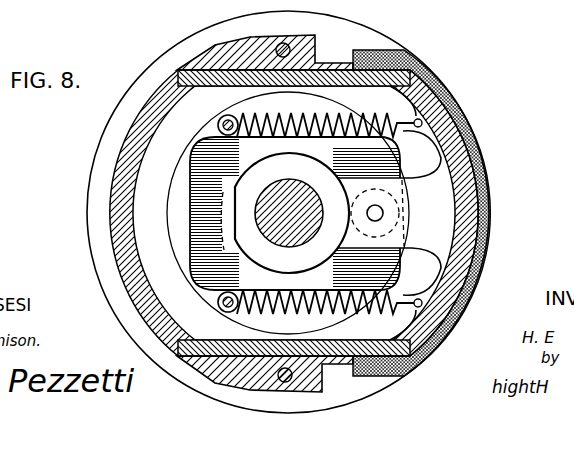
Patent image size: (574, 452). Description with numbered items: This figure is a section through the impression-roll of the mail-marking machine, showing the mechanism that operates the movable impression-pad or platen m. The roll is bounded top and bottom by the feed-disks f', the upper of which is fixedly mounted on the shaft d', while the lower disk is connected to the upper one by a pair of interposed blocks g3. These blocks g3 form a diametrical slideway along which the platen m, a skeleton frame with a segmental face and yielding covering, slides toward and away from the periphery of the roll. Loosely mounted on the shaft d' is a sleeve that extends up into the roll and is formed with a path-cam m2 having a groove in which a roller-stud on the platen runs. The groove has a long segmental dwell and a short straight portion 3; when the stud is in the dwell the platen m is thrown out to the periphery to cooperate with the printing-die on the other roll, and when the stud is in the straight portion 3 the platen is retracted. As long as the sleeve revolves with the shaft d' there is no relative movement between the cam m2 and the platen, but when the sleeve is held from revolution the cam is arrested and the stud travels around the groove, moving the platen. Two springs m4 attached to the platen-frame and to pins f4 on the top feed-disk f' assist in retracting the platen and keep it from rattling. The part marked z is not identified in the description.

The feed-disks f' is at (266, 212).
The impression-pad or platen m is at (453, 105).
The interposed blocks g3 is at (230, 403).
The path-cam m2 is at (190, 241).
The short straight portion 3 is at (190, 183).
The shaft d' is at (292, 209).
The pivot pin boss z is at (340, 163).
The springs m4 is at (373, 110).
The pins f4 is at (208, 318).